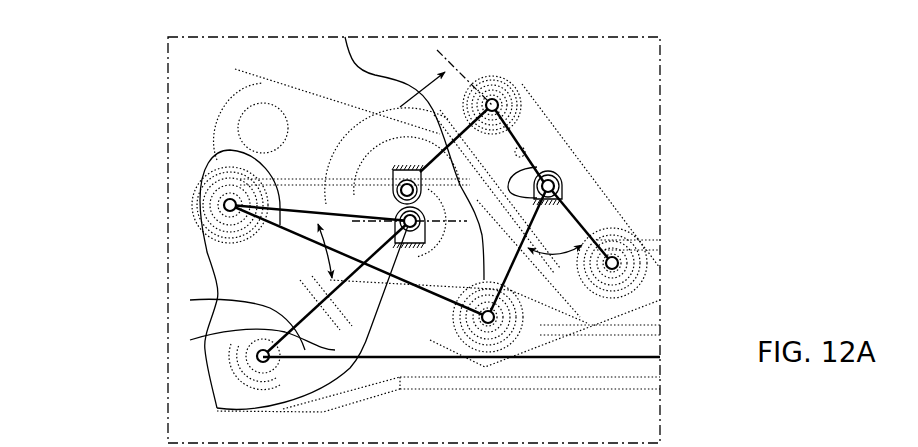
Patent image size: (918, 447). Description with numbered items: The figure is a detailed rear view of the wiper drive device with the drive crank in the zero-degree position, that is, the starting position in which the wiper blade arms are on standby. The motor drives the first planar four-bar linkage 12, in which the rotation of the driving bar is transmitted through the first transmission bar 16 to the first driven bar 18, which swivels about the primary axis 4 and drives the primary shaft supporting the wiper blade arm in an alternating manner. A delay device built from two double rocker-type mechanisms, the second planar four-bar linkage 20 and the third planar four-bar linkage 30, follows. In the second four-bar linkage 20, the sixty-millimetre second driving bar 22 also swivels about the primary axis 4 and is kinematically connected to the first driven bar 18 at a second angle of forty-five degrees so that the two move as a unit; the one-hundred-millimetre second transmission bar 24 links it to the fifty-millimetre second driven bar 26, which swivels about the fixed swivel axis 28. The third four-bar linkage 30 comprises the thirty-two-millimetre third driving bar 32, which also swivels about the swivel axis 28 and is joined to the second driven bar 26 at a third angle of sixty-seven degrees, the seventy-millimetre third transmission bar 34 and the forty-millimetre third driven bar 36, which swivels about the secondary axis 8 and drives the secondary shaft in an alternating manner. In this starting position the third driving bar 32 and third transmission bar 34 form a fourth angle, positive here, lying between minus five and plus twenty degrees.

The primary axis 4 is at (190, 340).
The secondary axis 8 is at (399, 153).
The first planar four-bar linkage 12 is at (671, 371).
The first transmission bar 16 is at (607, 358).
The first driven bar 18 is at (190, 300).
The second planar four-bar linkage 20 is at (267, 255).
The second driving bar 22 is at (213, 150).
The second transmission bar 24 is at (217, 408).
The second driven bar 26 is at (545, 255).
The fixed swivel axis 28 is at (515, 198).
The third planar four-bar linkage 30 is at (600, 220).
The third driving bar 32 is at (534, 165).
The third transmission bar 34 is at (500, 112).
The third driven bar 36 is at (97, 445).